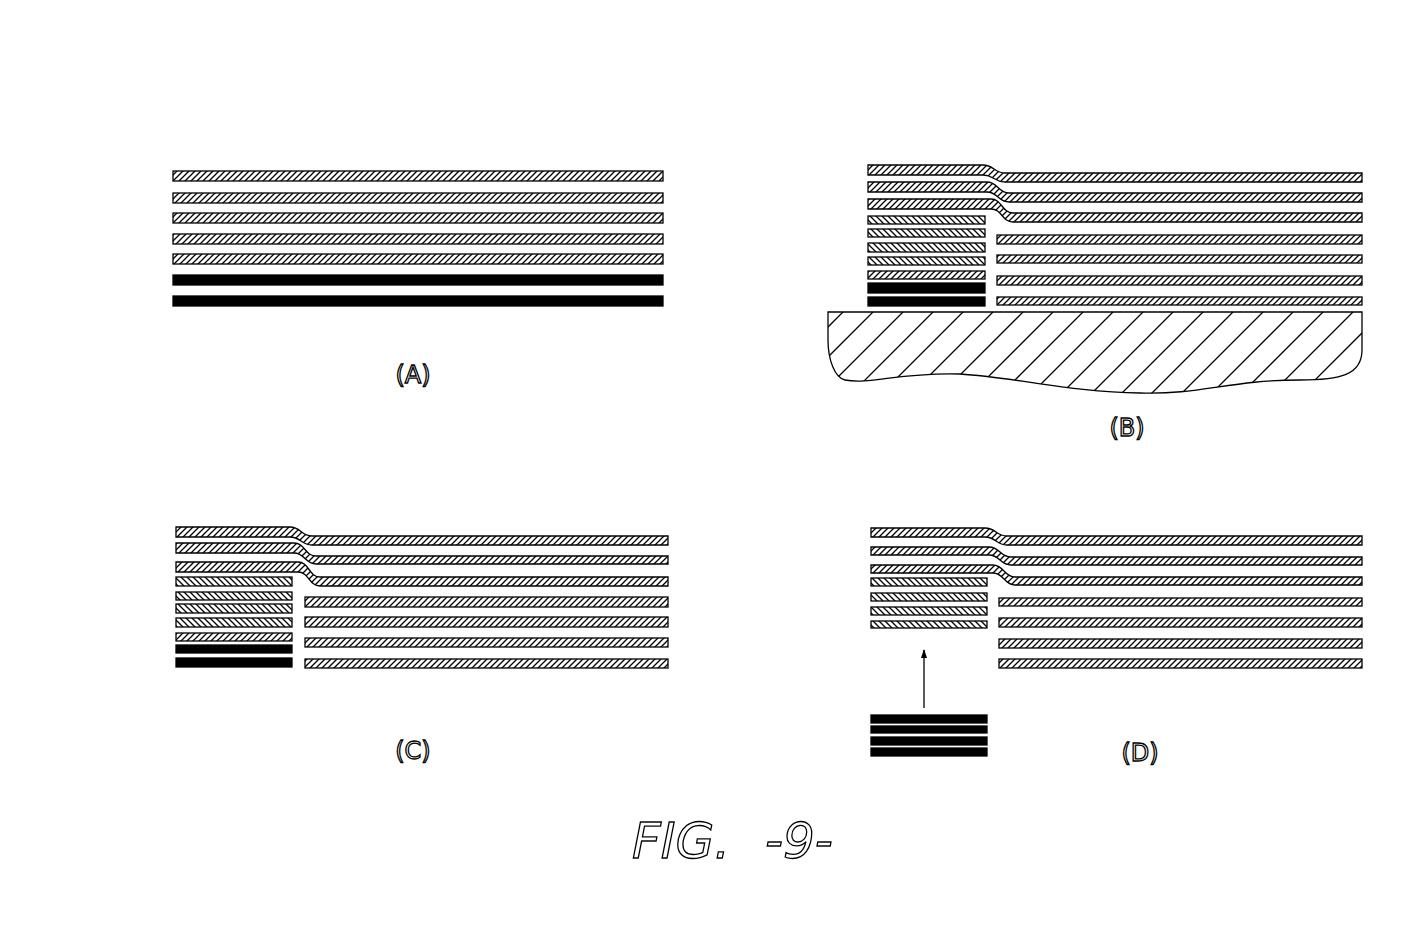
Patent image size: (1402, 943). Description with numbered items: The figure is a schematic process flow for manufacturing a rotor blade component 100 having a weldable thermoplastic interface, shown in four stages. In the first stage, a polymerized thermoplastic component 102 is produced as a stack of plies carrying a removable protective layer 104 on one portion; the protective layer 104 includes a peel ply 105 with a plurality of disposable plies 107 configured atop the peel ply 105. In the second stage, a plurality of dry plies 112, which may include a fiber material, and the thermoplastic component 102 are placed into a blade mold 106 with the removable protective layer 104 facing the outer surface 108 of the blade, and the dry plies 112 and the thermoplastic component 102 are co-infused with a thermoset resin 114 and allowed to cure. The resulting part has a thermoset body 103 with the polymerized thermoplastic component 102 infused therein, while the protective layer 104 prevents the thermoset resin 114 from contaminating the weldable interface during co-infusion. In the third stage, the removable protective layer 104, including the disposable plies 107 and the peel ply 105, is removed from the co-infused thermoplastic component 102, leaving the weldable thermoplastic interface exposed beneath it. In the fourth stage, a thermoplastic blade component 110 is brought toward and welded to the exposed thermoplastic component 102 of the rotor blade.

The rotor blade component 100 is at (1297, 152).
The polymerized thermoplastic component 102 is at (282, 130).
The thermoset body 103 is at (1192, 172).
The removable protective layer 104 is at (682, 250).
The peel ply 105 is at (682, 168).
The blade mold 106 is at (849, 312).
The disposable plies 107 is at (172, 300).
The outer surface 108 is at (545, 670).
The thermoplastic blade component 110 is at (852, 728).
The dry plies 112 is at (1072, 171).
The thermoset resin 114 is at (1027, 190).